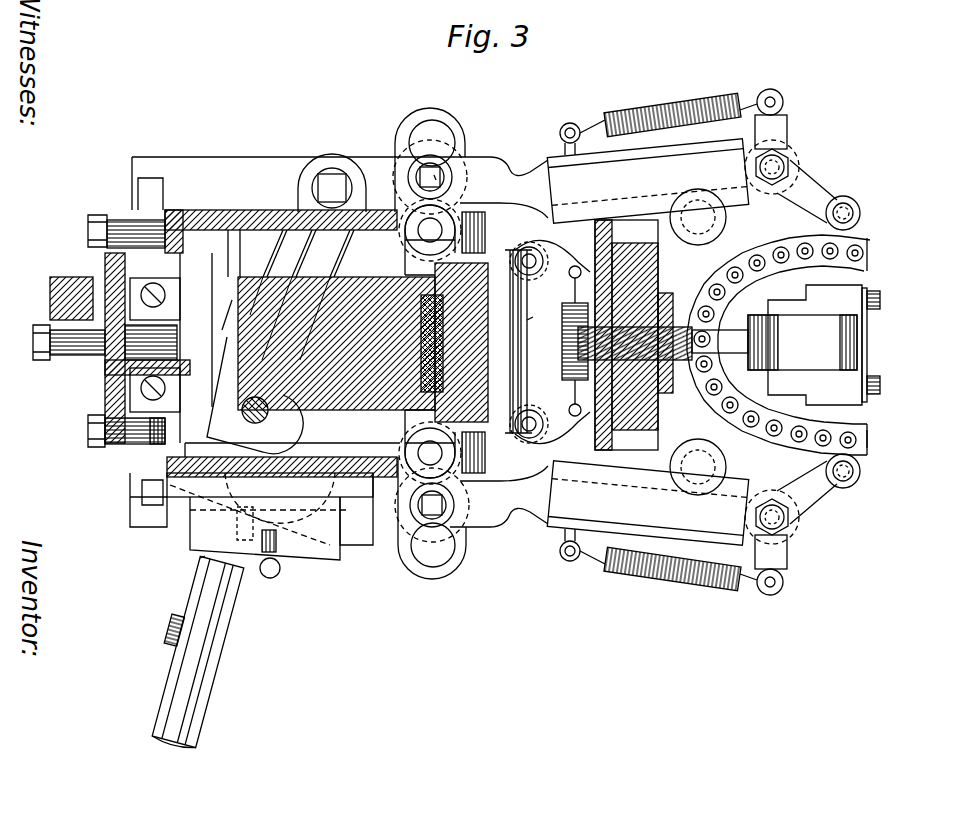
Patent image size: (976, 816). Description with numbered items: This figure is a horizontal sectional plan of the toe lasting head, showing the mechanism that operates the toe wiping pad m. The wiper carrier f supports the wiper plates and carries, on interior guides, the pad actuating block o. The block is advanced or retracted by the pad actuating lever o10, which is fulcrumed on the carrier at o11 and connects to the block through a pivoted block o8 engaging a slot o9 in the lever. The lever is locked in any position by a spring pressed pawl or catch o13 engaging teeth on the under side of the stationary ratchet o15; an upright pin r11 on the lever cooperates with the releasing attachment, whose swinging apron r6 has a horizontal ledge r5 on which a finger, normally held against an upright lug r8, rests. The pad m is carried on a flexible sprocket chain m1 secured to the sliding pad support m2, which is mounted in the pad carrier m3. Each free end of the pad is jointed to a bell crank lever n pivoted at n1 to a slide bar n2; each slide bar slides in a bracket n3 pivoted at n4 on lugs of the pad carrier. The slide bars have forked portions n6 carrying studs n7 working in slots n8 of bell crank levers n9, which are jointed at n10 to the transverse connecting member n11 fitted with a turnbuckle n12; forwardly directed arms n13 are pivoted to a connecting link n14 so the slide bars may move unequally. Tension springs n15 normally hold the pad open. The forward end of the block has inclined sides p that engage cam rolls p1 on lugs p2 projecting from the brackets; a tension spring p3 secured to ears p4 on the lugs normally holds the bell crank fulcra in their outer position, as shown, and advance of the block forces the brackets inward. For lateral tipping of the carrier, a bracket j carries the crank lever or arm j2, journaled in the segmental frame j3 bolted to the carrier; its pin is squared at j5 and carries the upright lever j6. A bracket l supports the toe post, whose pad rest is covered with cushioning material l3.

The wiper carrier f is at (213, 215).
The bracket j is at (172, 305).
The crank lever or arm j2 is at (137, 318).
The segmental frame j3 is at (88, 410).
The squared end of journaling pin j5 is at (68, 345).
The upright lever j6 is at (65, 288).
The pad actuating block o is at (338, 400).
The block o8 is at (277, 423).
The slot o9 is at (207, 437).
The pad actuating lever o10 is at (202, 603).
The fulcrum o11 is at (333, 178).
The spring pressed pawl or catch o13 is at (250, 500).
The stationary ratchet o15 is at (340, 505).
The horizontal ledge r5 is at (198, 543).
The swinging apron r6 is at (333, 543).
The upright lug r8 is at (278, 542).
The upright pin r11 is at (272, 578).
The bell crank lever n is at (830, 198).
The pivot n1 is at (782, 160).
The slide bar n2 is at (505, 175).
The bracket n3 is at (607, 127).
The pivot n4 is at (718, 218).
The forked portion n6 is at (404, 135).
The stud n7 is at (448, 165).
The slot n8 is at (434, 140).
The bell crank lever n9 is at (434, 175).
The joint n10 is at (407, 443).
The connecting member n11 is at (407, 423).
The turnbuckle n12 is at (563, 323).
The forwardly directed arm n13 is at (477, 233).
The connecting link n14 is at (528, 318).
The tension spring n15 is at (688, 103).
The toe wiping band or pad m is at (840, 423).
The flexible sprocket chain m1 is at (797, 440).
The pad support m2 is at (677, 337).
The pad carrier m3 is at (657, 400).
The bracket l is at (865, 367).
The cushioning material l3 is at (833, 338).
The inclined sides p is at (493, 240).
The cam roll p1 is at (517, 258).
The lug p2 is at (542, 250).
The tension spring p3 is at (563, 347).
The ears p4 is at (572, 407).